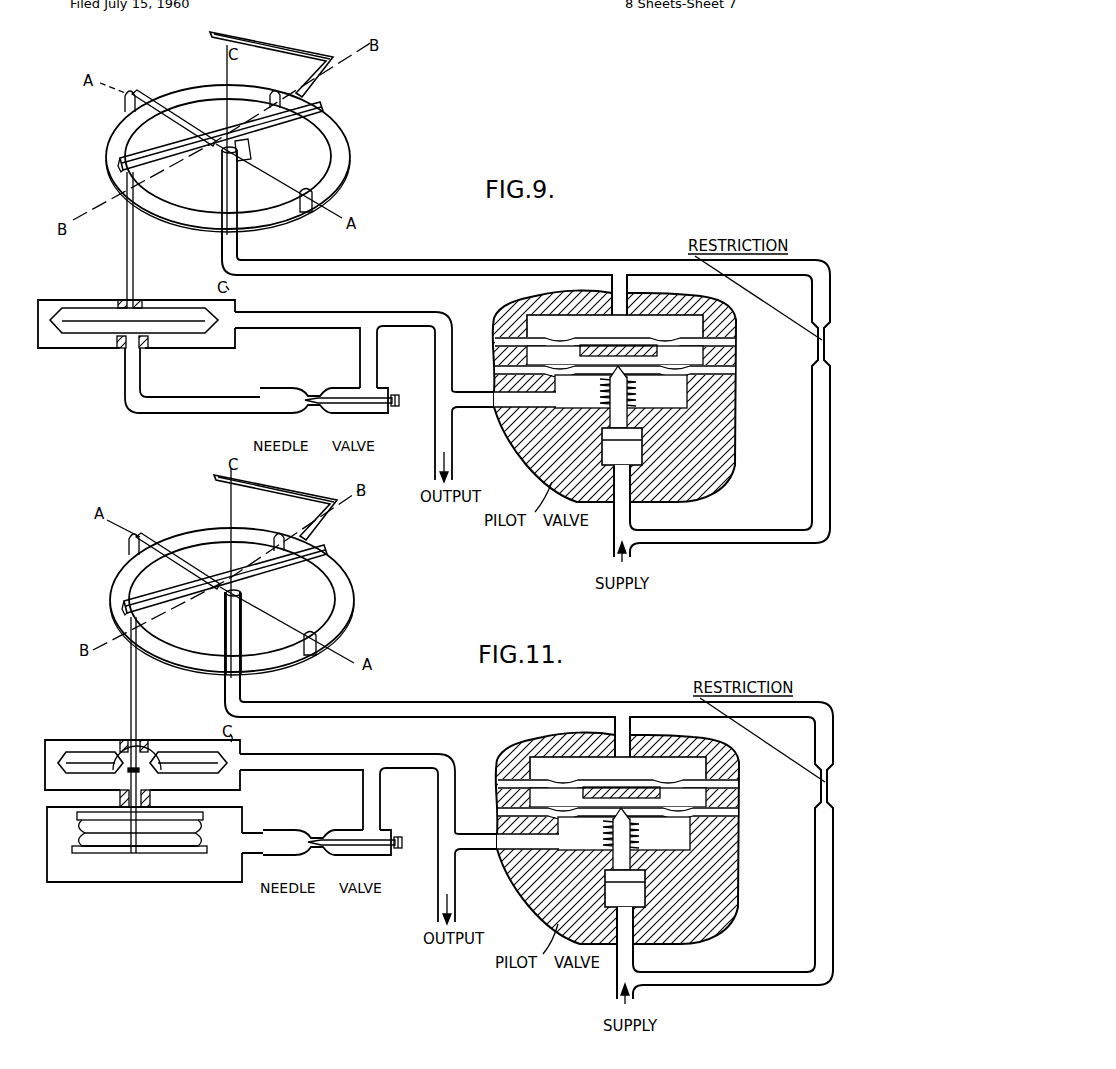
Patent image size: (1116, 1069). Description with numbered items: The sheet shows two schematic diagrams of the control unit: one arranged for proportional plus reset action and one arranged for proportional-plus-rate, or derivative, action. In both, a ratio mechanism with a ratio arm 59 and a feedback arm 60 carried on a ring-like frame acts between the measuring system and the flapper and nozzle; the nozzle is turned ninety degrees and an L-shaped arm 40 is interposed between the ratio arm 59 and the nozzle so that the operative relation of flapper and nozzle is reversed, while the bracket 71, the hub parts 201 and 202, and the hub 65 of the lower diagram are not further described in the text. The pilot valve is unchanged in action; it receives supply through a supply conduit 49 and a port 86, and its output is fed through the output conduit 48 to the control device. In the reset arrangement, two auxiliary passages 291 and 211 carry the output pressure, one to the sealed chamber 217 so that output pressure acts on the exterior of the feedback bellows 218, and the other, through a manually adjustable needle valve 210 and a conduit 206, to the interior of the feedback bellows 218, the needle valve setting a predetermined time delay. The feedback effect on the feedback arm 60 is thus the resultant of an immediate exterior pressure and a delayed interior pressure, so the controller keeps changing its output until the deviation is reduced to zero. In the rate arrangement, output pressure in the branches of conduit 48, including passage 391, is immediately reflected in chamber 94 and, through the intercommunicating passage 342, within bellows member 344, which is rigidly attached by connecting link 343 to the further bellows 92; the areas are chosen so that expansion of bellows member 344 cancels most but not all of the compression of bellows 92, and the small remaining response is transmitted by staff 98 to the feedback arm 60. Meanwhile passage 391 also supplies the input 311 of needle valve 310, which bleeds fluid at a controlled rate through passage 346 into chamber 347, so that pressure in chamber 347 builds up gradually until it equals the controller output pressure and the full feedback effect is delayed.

In FIG. 9, the lever arm 40 is at (300, 57).
In FIG. 11, the lever arm 40 is at (275, 504).
In FIG. 9, the ratio arm 59 is at (208, 134).
In FIG. 11, the ratio arm 59 is at (224, 580).
In FIG. 9, the feedback arm 60 is at (117, 138).
In FIG. 11, the feedback arm 60 is at (223, 601).
In FIG. 9, the ring bracket 71 is at (340, 138).
In FIG. 11, the ring bracket 71 is at (241, 595).
In FIG. 9, the tube stem 201 is at (236, 160).
In FIG. 9, the block 202 is at (250, 148).
In FIG. 9, the sealed chamber 217 is at (172, 300).
In FIG. 9, the feedback bellows 218 is at (175, 332).
In FIG. 9, the auxiliary passage 291 is at (300, 316).
In FIG. 9, the auxiliary passage 211 is at (377, 352).
In FIG. 9, the conduit 206 is at (188, 410).
In FIG. 9, the needle valve 210 is at (323, 414).
In FIG. 9, the output conduit 48 is at (437, 448).
In FIG. 11, the output conduit 48 is at (466, 889).
In FIG. 9, the pilot valve port 86 is at (508, 412).
In FIG. 11, the pilot valve port 86 is at (507, 853).
In FIG. 9, the supply conduit 49 is at (613, 522).
In FIG. 11, the supply conduit 49 is at (612, 955).
In FIG. 11, the hub 65 is at (219, 632).
In FIG. 11, the staff 98 is at (130, 697).
In FIG. 11, the further bellows 92 is at (86, 754).
In FIG. 11, the chamber 94 is at (183, 752).
In FIG. 11, the passage 391 is at (347, 783).
In FIG. 11, the needle valve input 311 is at (409, 845).
In FIG. 11, the intercommunicating passage 342 is at (127, 814).
In FIG. 11, the connecting link 343 is at (140, 829).
In FIG. 11, the bellows member 344 is at (203, 840).
In FIG. 11, the passage 346 is at (257, 839).
In FIG. 11, the needle valve 310 is at (332, 858).
In FIG. 11, the chamber 347 is at (118, 880).